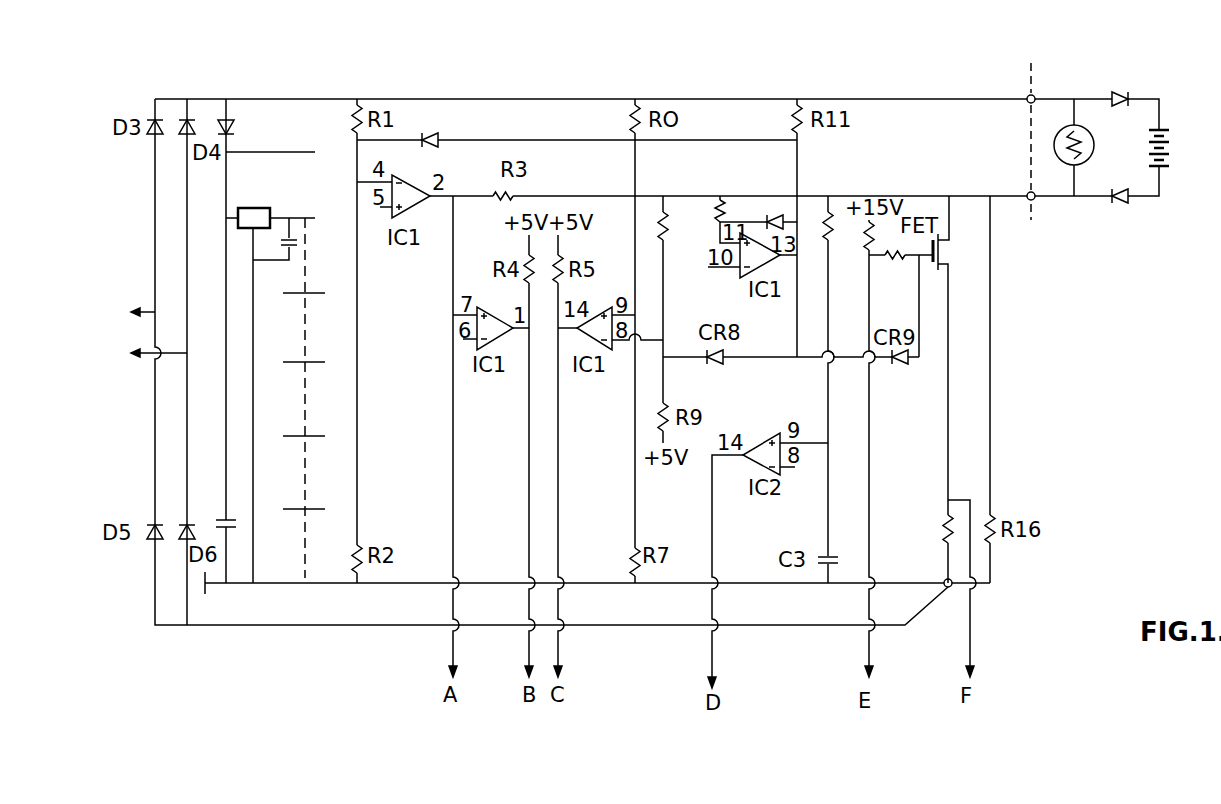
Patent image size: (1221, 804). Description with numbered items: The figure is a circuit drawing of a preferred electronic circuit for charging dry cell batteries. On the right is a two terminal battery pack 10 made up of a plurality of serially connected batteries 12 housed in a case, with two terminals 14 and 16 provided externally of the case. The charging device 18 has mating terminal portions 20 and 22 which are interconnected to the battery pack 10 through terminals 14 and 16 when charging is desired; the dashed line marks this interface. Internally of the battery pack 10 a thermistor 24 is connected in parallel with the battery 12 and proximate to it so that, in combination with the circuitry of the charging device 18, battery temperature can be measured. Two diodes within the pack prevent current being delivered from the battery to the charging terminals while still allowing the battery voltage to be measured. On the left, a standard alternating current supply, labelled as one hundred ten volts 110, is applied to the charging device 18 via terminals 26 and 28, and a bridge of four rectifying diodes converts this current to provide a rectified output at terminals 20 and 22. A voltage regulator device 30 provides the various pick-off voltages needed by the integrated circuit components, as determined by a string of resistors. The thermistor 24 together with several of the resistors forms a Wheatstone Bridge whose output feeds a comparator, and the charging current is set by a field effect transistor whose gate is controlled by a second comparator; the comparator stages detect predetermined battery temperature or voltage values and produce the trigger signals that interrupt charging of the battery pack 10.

The battery pack 10 is at (1139, 93).
The batteries 12 is at (1172, 150).
The terminal 14 is at (1034, 95).
The terminal 16 is at (1035, 201).
The charging device 18 is at (806, 96).
The mating terminal portion 20 is at (1028, 96).
The mating terminal portion 22 is at (1027, 199).
The thermistor 24 is at (1082, 131).
The terminal 26 is at (129, 311).
The terminal 28 is at (143, 354).
The voltage regulator device 30 is at (293, 398).
The 110 VAC source 110 is at (100, 332).